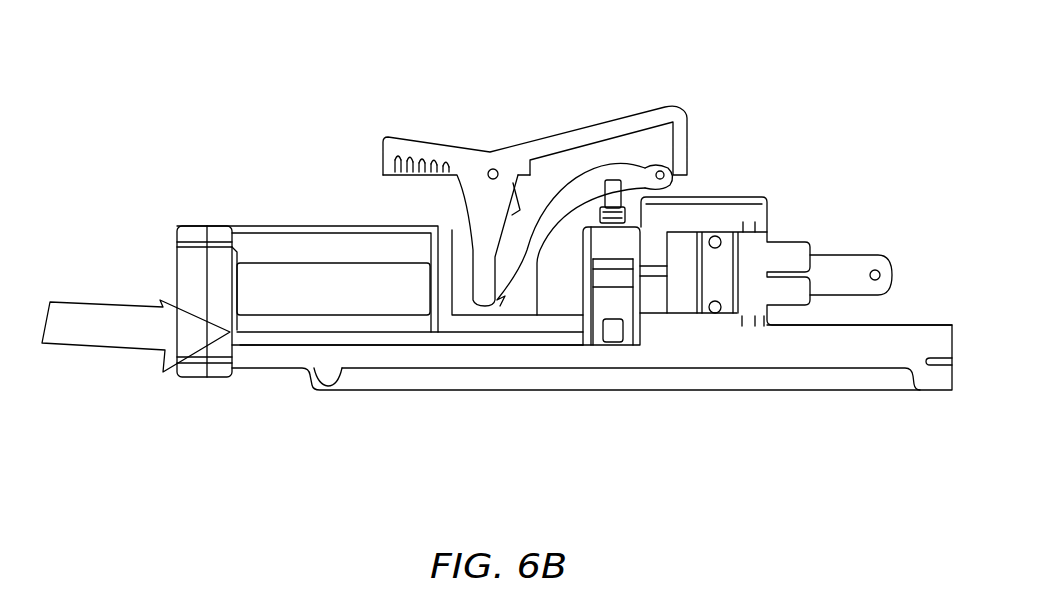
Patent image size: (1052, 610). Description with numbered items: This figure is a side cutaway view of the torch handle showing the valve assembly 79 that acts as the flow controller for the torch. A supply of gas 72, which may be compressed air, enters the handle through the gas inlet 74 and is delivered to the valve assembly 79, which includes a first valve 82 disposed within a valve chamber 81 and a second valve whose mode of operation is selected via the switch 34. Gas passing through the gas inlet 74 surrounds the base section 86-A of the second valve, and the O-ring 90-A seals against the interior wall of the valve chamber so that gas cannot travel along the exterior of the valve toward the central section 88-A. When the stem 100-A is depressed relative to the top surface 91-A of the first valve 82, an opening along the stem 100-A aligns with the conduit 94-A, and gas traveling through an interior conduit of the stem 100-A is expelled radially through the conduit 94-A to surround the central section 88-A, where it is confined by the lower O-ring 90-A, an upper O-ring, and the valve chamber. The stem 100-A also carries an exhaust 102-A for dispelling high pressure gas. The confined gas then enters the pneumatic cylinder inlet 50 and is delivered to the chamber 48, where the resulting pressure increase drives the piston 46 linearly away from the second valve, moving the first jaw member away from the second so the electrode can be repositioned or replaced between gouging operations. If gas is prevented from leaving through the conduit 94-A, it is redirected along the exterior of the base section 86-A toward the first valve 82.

The switch 34 is at (445, 137).
The piston 46 is at (730, 233).
The chamber 48 is at (687, 243).
The pneumatic cylinder inlet 50 is at (658, 280).
The supply of gas 72 is at (115, 350).
The gas inlet 74 is at (177, 227).
The valve assembly 79 is at (458, 228).
The valve chamber 81 is at (282, 243).
The first valve 82 is at (597, 353).
The base section 86-A is at (603, 315).
The central section 88-A is at (623, 258).
The O-ring 90-A is at (650, 308).
The top surface 91-A is at (603, 231).
The conduit 94-A is at (632, 320).
The stem 100-A is at (611, 193).
The exhaust 102-A is at (605, 216).